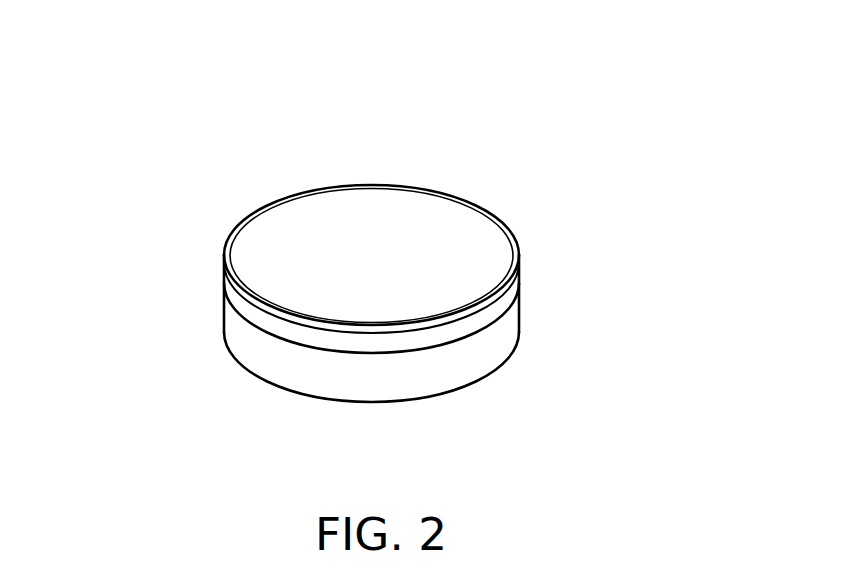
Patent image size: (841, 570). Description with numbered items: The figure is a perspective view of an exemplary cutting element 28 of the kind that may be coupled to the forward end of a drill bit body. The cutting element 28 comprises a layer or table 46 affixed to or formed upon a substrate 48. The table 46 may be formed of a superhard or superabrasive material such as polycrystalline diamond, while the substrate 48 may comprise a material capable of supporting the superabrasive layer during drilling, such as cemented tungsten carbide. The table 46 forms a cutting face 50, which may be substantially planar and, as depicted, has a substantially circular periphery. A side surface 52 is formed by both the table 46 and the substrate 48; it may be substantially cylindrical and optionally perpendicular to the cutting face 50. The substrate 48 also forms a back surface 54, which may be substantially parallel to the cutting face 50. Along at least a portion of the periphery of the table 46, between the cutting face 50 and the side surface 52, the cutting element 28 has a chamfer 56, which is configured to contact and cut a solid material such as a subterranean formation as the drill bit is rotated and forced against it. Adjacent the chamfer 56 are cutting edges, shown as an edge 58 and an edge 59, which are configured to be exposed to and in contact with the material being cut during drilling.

The cutting element 28 is at (532, 138).
The table 46 is at (475, 324).
The substrate 48 is at (473, 363).
The cutting face 50 is at (315, 238).
The side surface 52 is at (237, 332).
The back surface 54 is at (305, 398).
The chamfer 56 is at (507, 288).
The edge 58 is at (225, 277).
The edge 59 is at (237, 293).